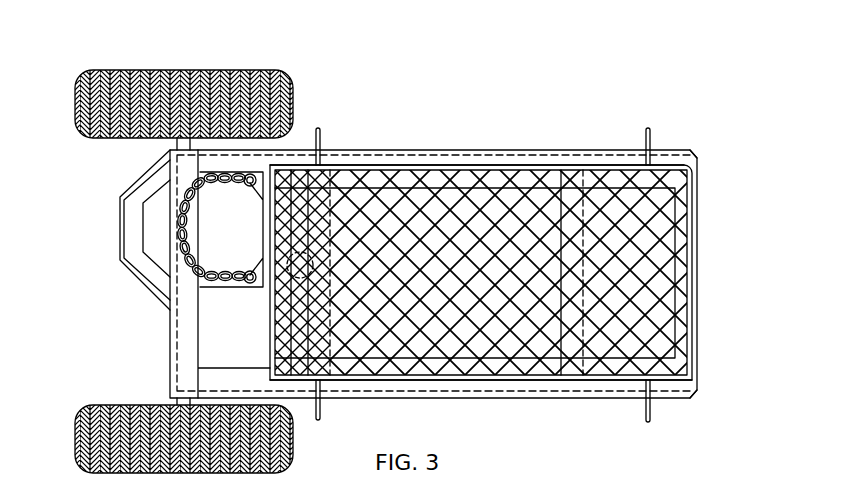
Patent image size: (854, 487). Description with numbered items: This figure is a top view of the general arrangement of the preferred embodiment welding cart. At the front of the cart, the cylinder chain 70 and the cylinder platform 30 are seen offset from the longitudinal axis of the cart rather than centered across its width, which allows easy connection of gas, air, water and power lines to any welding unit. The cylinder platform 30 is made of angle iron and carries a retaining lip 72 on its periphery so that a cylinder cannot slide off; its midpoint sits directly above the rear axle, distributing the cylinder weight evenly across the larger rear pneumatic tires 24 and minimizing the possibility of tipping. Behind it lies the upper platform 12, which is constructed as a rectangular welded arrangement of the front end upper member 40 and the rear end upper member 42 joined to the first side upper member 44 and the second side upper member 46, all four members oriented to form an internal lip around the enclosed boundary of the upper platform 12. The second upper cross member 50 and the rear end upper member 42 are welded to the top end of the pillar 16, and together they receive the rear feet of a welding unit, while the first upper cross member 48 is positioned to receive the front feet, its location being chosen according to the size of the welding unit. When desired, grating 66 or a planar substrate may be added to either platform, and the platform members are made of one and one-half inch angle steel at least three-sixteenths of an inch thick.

The upper platform 12 is at (698, 195).
The pillar 16 is at (315, 258).
The rear pneumatic tires 24 is at (265, 170).
The cylinder platform 30 is at (143, 188).
The front end upper member 40 is at (698, 249).
The rear end upper member 42 is at (270, 343).
The first side upper member 44 is at (533, 165).
The second side upper member 46 is at (535, 380).
The first upper cross member 48 is at (585, 185).
The second upper cross member 50 is at (322, 263).
The grating 66 is at (662, 303).
The cylinder chain 70 is at (210, 273).
The retaining lip 72 is at (123, 230).